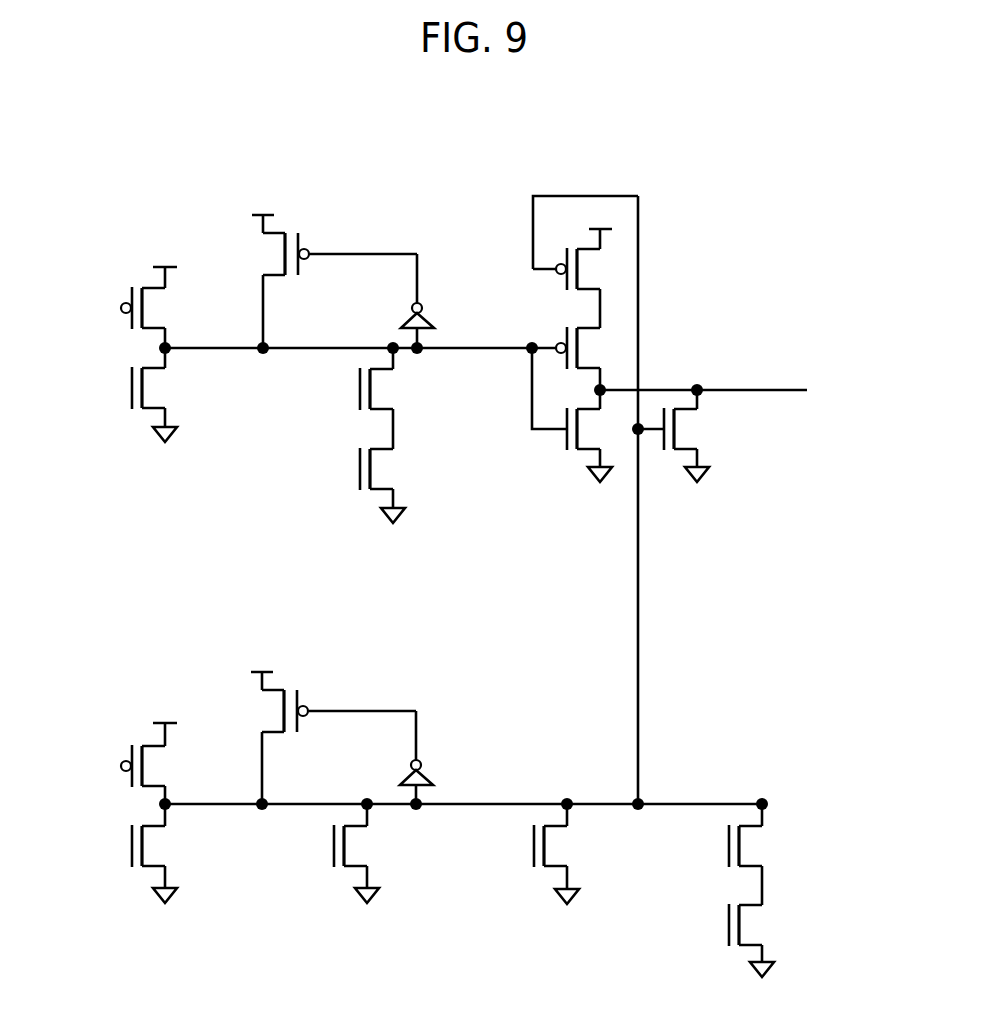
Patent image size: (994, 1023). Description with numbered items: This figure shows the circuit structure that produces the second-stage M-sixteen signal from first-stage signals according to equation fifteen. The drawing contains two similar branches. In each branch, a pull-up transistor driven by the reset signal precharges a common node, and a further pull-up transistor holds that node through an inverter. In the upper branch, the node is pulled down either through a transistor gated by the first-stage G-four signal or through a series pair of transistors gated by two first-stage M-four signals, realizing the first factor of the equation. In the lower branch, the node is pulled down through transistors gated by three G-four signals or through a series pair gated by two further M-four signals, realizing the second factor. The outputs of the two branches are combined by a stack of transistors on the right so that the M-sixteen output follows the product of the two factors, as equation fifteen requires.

The reset PMOS transistor reset is at (121, 308).